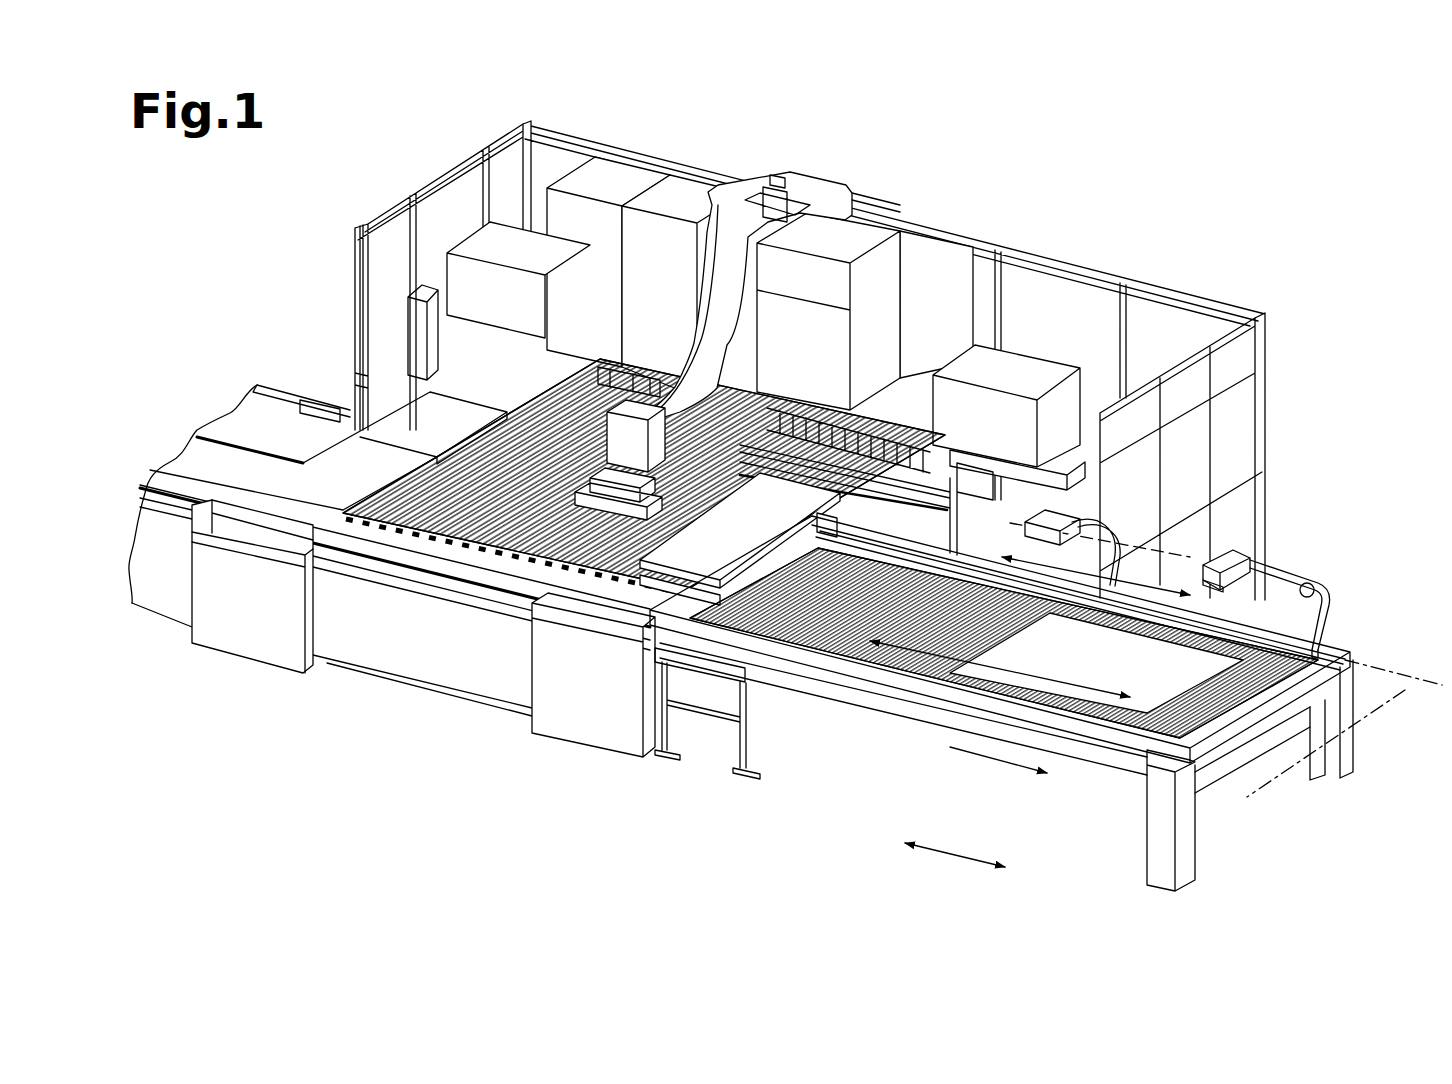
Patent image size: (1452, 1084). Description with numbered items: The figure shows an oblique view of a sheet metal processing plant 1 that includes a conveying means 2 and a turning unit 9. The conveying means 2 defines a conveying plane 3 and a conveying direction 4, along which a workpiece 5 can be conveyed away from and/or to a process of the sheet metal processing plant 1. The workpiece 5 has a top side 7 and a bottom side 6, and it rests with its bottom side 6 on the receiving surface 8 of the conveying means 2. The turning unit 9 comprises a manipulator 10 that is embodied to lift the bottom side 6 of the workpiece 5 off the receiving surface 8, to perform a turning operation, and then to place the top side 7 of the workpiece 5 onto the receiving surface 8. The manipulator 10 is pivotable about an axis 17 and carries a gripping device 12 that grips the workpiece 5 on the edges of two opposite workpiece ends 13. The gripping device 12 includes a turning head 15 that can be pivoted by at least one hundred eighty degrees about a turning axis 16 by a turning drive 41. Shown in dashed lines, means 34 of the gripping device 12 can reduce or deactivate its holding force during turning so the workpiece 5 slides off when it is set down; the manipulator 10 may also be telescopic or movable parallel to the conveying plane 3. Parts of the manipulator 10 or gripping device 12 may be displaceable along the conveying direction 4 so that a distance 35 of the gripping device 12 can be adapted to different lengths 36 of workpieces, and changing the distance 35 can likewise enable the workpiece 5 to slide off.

The sheet metal processing plant 1 is at (1214, 183).
The conveying means 2 is at (793, 797).
The conveying plane 3 is at (1330, 742).
The conveying direction 4 is at (950, 857).
The workpiece 5 is at (1093, 671).
The bottom side 6 is at (1183, 790).
The top side 7 is at (868, 642).
The receiving surface 8 is at (802, 657).
The turning unit 9 is at (1333, 508).
The manipulator 10 is at (1345, 543).
The gripping device 12 is at (1242, 541).
The workpiece ends 13 is at (1027, 617).
The turning head 15 is at (1252, 571).
The turning axis 16 is at (1189, 552).
The axis 17 is at (1381, 667).
The means 34 is at (1325, 592).
The distance 35 is at (1114, 572).
The lengths 36 is at (950, 750).
The turning drive 41 is at (1260, 555).